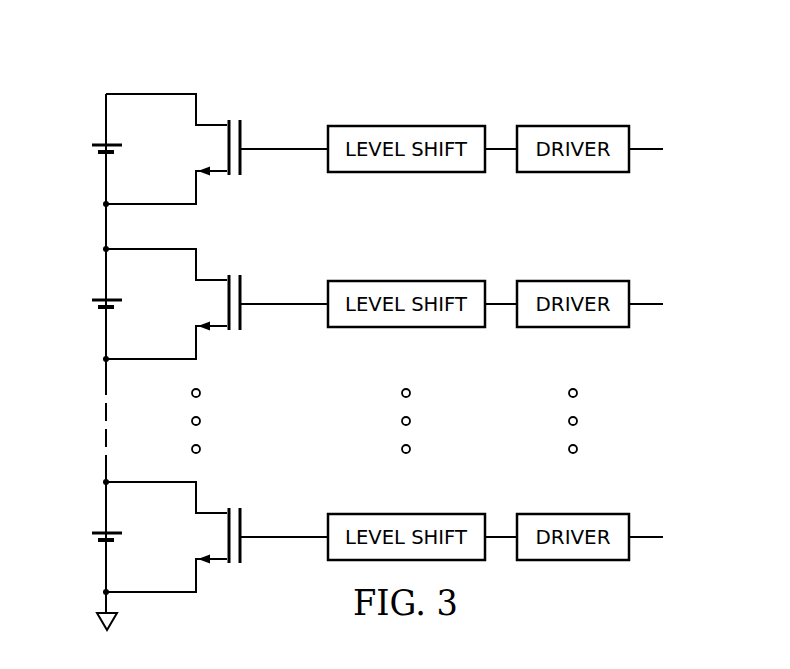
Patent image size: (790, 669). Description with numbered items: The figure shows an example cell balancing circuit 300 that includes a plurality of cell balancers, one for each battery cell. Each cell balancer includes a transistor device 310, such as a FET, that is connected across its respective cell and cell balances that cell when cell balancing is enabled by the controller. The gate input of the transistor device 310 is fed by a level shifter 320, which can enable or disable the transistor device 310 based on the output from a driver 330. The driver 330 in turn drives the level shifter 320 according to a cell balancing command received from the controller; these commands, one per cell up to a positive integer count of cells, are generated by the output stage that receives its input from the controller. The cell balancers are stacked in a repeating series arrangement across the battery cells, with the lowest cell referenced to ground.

The cell balancing circuit 300 is at (509, 78).
The transistor device 310 is at (210, 305).
The level shifter 320 is at (406, 276).
The driver 330 is at (574, 276).